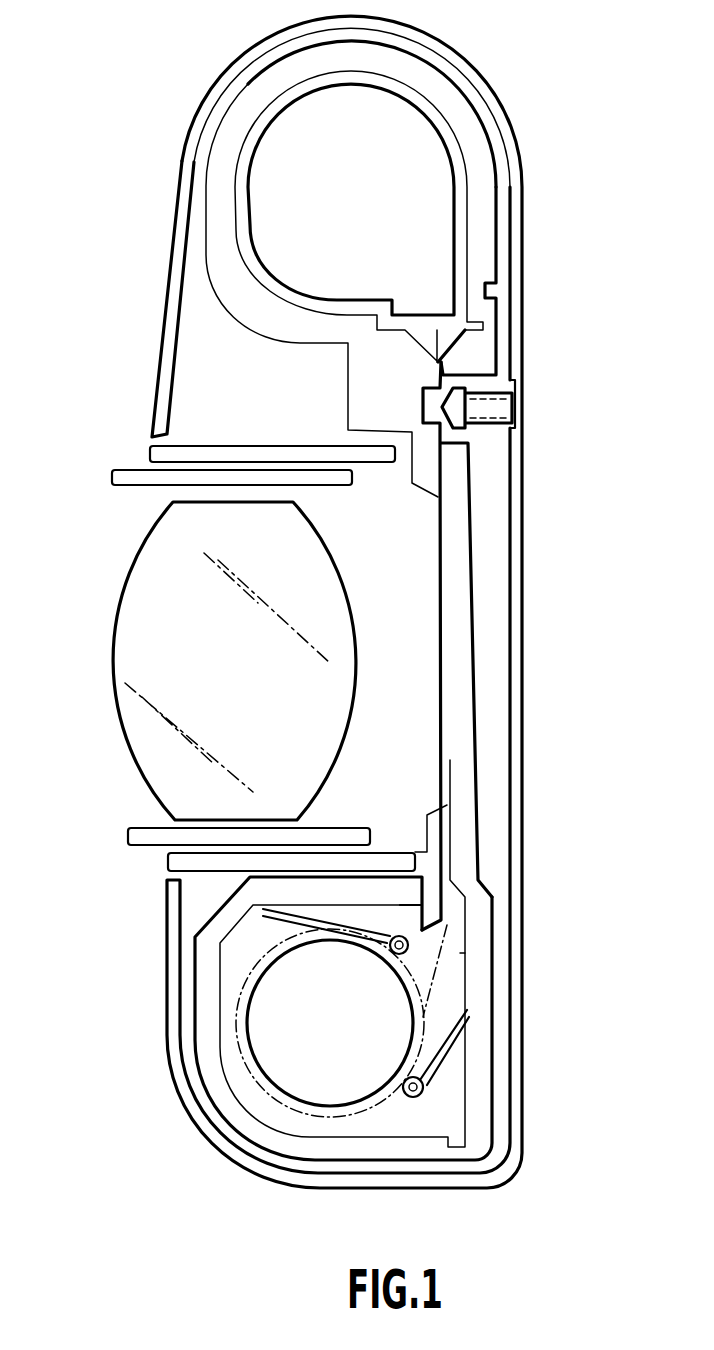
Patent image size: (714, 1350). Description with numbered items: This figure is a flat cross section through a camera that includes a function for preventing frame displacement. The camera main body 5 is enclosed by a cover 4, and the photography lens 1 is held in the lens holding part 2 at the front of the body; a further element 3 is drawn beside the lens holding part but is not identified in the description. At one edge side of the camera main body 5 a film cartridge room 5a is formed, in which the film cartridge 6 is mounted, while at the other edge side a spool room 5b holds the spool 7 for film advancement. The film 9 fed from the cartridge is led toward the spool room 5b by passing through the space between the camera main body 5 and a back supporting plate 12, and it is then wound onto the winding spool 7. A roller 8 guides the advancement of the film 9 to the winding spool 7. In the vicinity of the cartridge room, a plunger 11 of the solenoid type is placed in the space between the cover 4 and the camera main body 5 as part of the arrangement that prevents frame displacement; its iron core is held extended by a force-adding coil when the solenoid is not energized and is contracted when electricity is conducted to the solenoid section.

The photography lens 1 is at (132, 601).
The lens holding part 2 is at (144, 478).
The lower filter plates 3 is at (172, 868).
The cover 4 is at (487, 82).
The camera main body 5 is at (266, 83).
The film cartridge room 5a is at (241, 148).
The spool room 5b is at (228, 957).
The film cartridge 6 is at (437, 206).
The spool 7 is at (285, 1073).
The roller 8 is at (346, 915).
The film 9 is at (430, 940).
The plunger 11 is at (498, 412).
The back supporting plate 12 is at (474, 644).